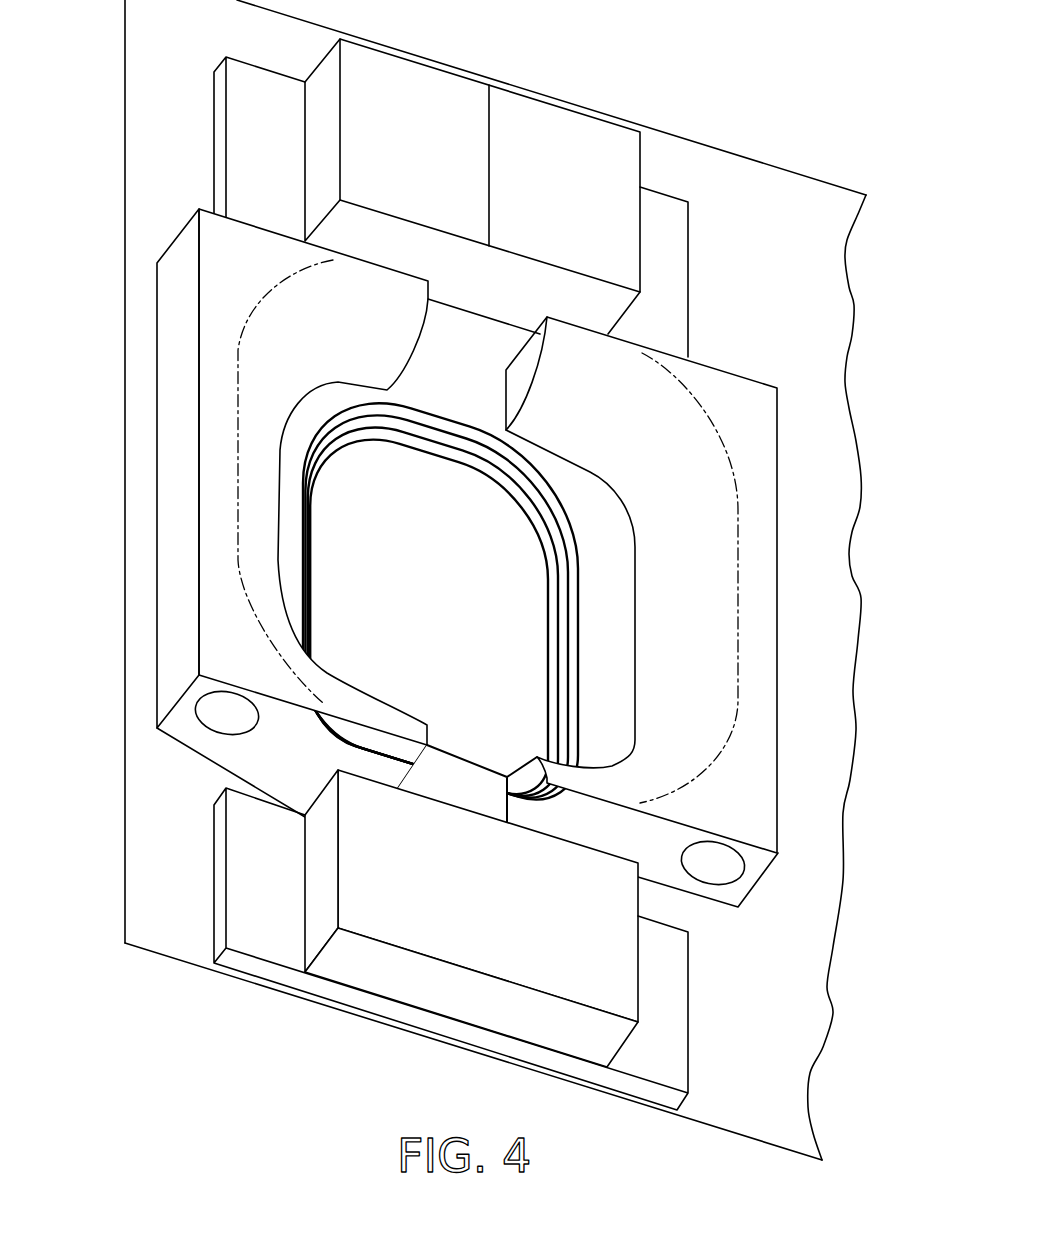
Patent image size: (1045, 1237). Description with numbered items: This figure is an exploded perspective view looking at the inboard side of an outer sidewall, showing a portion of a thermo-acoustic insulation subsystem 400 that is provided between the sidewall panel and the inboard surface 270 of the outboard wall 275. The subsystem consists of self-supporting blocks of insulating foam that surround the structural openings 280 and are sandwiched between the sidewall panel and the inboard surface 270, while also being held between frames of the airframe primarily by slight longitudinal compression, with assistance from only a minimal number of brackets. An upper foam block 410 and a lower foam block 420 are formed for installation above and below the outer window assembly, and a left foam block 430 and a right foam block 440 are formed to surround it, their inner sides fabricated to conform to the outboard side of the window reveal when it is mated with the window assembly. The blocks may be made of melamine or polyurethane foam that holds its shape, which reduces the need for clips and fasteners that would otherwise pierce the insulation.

The inboard surface of the outboard wall 270 is at (478, 376).
The outboard wall 275 is at (125, 749).
The structural openings 280 is at (440, 607).
The thermo-acoustic insulation subsystem 400 is at (481, 580).
The upper foam block 410 is at (520, 110).
The lower foam block 420 is at (393, 1022).
The left foam block 430 is at (170, 505).
The right foam block 440 is at (777, 567).